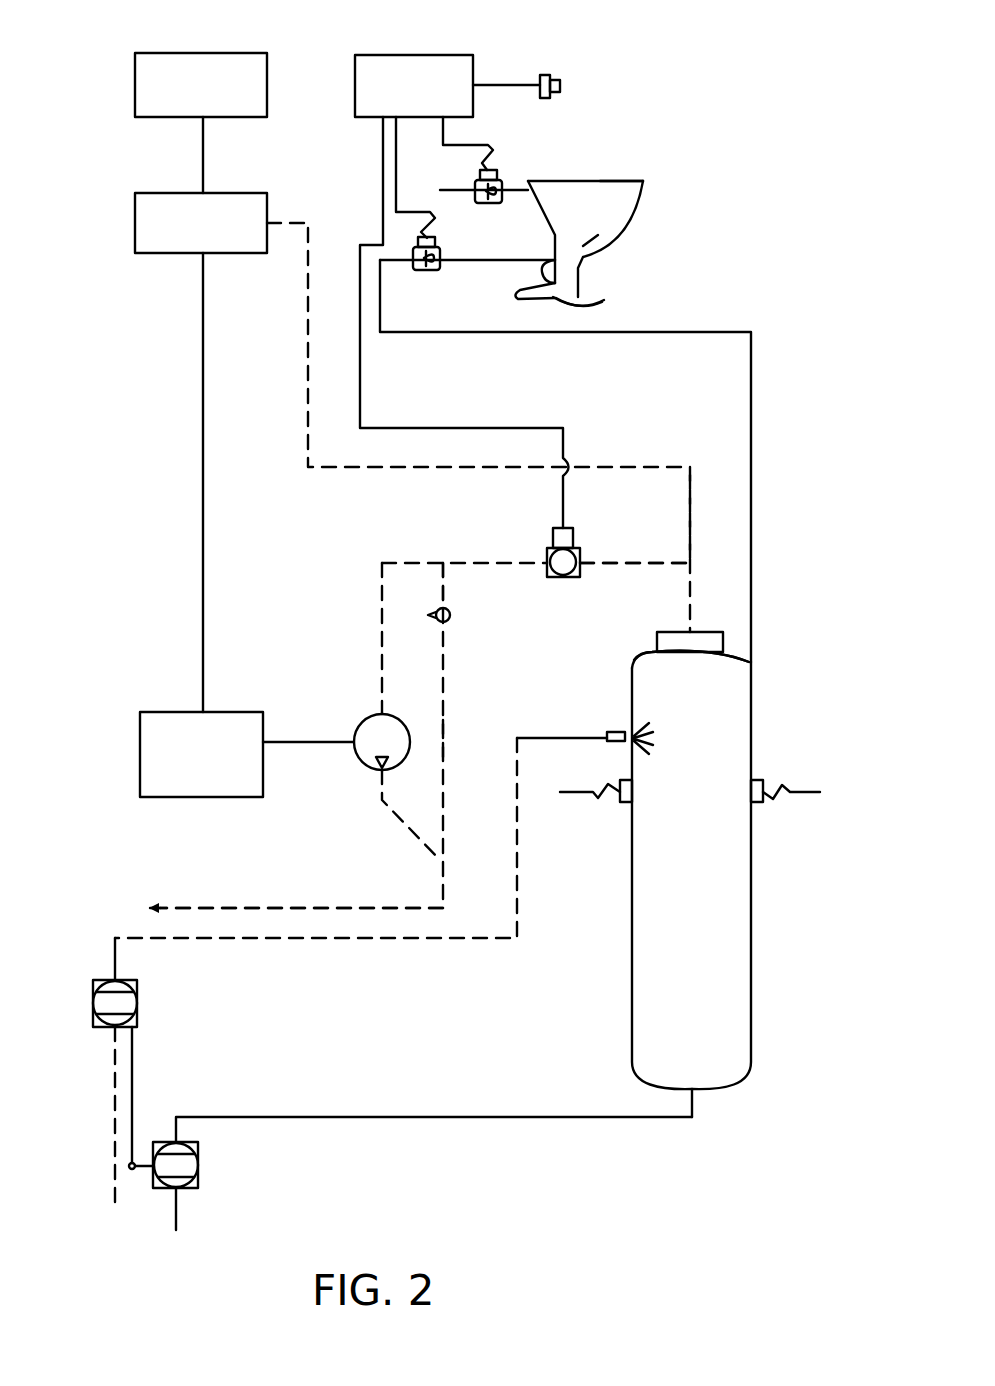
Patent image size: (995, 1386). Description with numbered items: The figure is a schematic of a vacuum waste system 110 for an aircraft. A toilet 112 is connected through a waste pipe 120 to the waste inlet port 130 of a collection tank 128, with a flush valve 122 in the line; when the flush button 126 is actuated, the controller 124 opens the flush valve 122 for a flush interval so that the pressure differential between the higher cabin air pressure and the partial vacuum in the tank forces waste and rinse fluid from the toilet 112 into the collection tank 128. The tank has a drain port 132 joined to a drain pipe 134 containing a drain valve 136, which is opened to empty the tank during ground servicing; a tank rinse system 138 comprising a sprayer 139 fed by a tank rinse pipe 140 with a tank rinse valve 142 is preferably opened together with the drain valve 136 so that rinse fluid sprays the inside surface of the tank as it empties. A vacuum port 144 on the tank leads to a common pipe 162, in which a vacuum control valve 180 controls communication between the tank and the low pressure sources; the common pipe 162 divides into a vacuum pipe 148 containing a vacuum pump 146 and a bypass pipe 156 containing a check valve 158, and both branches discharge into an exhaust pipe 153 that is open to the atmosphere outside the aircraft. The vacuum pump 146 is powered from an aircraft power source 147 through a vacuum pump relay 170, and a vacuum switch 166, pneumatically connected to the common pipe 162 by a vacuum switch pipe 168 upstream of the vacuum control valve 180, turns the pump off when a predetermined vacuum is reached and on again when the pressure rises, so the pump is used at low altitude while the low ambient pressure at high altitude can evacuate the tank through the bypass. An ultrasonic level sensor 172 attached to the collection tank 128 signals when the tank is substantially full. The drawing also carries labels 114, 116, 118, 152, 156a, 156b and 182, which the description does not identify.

The vacuum waste system 110 is at (764, 582).
The toilet 112 is at (612, 225).
The hopper inlet 114 is at (640, 193).
The hopper outlet 116 is at (606, 296).
The first valve 118 is at (497, 188).
The waste pipe 120 is at (751, 605).
The flush valve 122 is at (440, 253).
The controller 124 is at (443, 54).
The flush button 126 is at (548, 74).
The collection tank 128 is at (740, 935).
The waste inlet port 130 is at (703, 697).
The drain port 132 is at (694, 1092).
The drain pipe 134 is at (523, 1118).
The drain valve 136 is at (195, 1183).
The tank rinse system 138 is at (113, 1044).
The sprayer 139 is at (612, 733).
The tank rinse pipe 140 is at (370, 938).
The tank rinse valve 142 is at (127, 1001).
The vacuum port 144 is at (690, 630).
The vacuum pump 146 is at (358, 752).
The aircraft power source 147 is at (247, 52).
The vacuum pipe 148 is at (380, 641).
The check valve 152 is at (380, 762).
The exhaust pipe 153 is at (253, 908).
The bypass pipe 156 is at (443, 693).
The first branch line 156a is at (443, 569).
The second branch line 156b is at (443, 746).
The check valve 158 is at (450, 617).
The common pipe 162 is at (633, 566).
The vacuum switch 166 is at (265, 181).
The vacuum switch pipe 168 is at (310, 268).
The vacuum pump relay 170 is at (140, 750).
The ultrasonic level sensor 172 is at (763, 800).
The vacuum control valve 180 is at (557, 580).
The valve actuator 182 is at (573, 538).